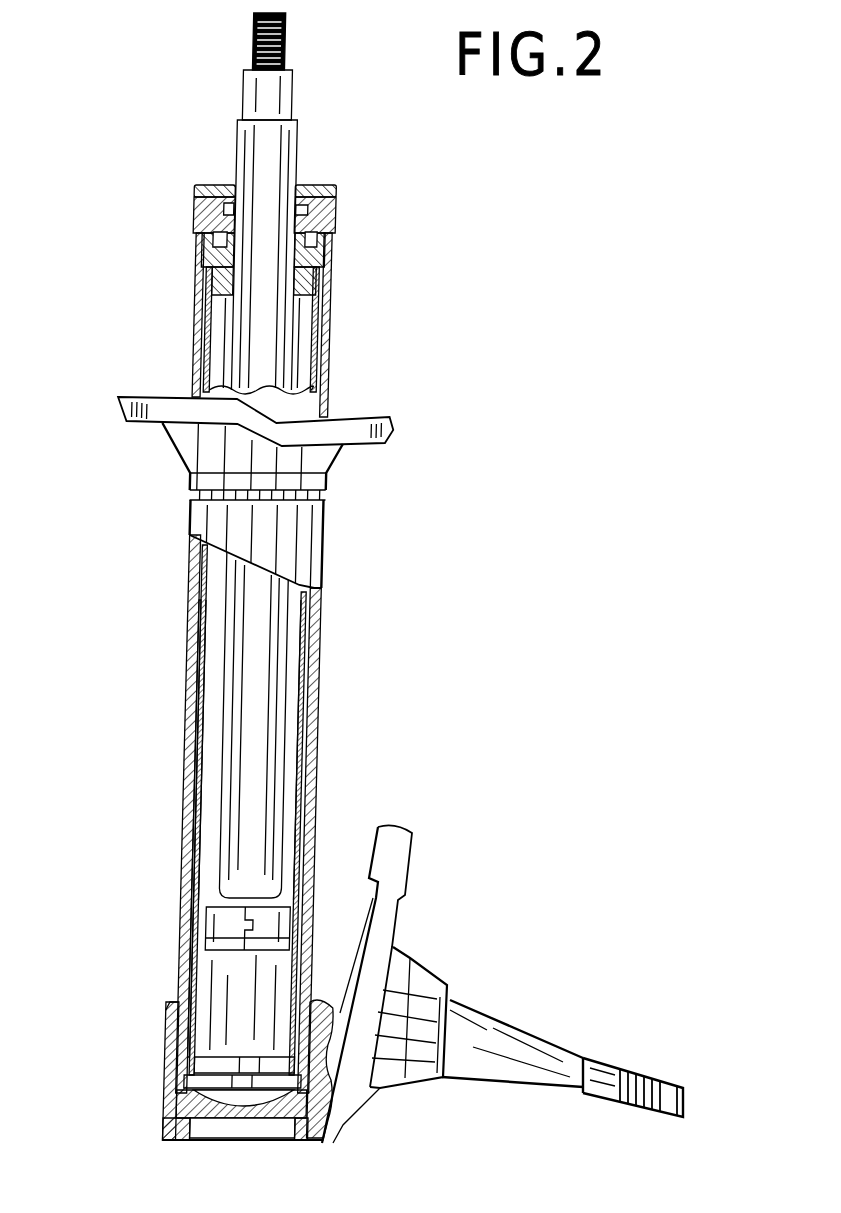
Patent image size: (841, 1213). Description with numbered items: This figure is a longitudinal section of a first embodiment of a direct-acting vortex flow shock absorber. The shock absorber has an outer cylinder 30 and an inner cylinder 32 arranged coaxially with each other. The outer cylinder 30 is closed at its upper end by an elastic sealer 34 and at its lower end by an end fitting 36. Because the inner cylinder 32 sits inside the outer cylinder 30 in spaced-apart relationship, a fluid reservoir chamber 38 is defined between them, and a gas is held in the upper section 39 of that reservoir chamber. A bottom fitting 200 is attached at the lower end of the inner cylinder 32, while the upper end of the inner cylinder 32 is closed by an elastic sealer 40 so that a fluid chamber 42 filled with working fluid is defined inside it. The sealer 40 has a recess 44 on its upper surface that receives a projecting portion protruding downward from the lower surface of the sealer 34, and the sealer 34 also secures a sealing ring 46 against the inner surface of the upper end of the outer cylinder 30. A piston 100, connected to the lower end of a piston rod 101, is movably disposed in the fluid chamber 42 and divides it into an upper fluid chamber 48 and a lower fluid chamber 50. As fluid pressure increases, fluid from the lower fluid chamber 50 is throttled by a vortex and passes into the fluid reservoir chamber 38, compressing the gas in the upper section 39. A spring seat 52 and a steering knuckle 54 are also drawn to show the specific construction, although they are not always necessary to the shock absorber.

The outer cylinder 30 is at (323, 645).
The inner cylinder 32 is at (190, 673).
The elastic sealer 34 is at (337, 213).
The end fitting 36 is at (290, 1141).
The fluid reservoir chamber 38 is at (186, 780).
The upper section of the fluid reservoir chamber 39 is at (203, 358).
The elastic sealer 40 is at (332, 247).
The fluid chamber 42 is at (290, 792).
The recess 44 is at (198, 253).
The sealing ring 46 is at (208, 185).
The upper fluid chamber 48 is at (290, 693).
The lower fluid chamber 50 is at (217, 1020).
The spring seat 52 is at (398, 417).
The steering knuckle 54 is at (523, 1050).
The piston 100 is at (217, 920).
The piston rod 101 is at (260, 605).
The bottom fitting 200 is at (172, 1098).